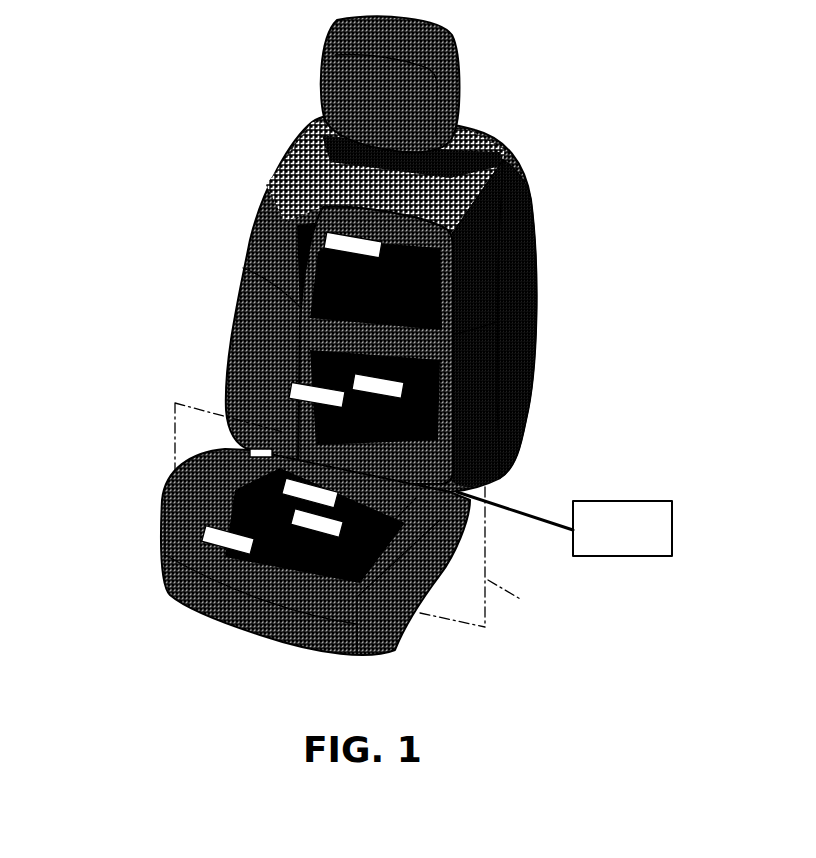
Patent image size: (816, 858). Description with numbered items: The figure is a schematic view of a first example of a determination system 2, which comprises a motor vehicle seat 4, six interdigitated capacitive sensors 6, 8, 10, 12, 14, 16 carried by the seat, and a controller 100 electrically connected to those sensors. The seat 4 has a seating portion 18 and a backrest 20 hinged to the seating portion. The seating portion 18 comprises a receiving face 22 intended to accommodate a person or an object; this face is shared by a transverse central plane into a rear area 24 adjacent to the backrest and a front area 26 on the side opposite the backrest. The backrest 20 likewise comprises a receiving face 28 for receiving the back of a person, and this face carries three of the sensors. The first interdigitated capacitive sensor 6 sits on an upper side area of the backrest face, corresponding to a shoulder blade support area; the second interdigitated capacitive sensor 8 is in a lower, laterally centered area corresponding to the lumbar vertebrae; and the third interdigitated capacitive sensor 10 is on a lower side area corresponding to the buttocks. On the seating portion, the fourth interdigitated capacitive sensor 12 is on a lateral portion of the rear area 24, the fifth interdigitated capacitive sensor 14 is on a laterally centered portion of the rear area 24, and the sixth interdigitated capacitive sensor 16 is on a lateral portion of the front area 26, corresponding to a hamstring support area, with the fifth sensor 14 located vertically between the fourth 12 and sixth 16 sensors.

The determination system 2 is at (357, 374).
The motor vehicle seat 4 is at (297, 536).
The first interdigitated capacitive sensor 6 is at (327, 240).
The second interdigitated capacitive sensor 8 is at (303, 343).
The third interdigitated capacitive sensor 10 is at (303, 383).
The fourth interdigitated capacitive sensor 12 is at (250, 450).
The fifth interdigitated capacitive sensor 14 is at (243, 468).
The sixth interdigitated capacitive sensor 16 is at (203, 532).
The seating portion 18 is at (162, 548).
The backrest 20 is at (383, 254).
The receiving face 22 is at (403, 593).
The rear area 24 is at (453, 537).
The front area 26 is at (268, 592).
The receiving face 28 is at (478, 308).
The controller 100 is at (564, 524).